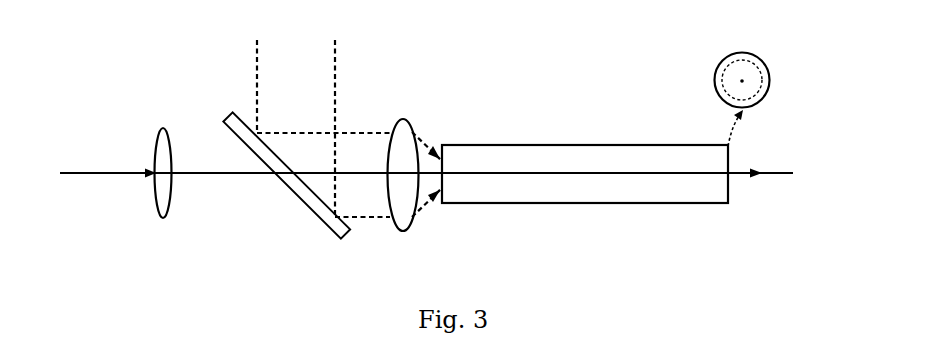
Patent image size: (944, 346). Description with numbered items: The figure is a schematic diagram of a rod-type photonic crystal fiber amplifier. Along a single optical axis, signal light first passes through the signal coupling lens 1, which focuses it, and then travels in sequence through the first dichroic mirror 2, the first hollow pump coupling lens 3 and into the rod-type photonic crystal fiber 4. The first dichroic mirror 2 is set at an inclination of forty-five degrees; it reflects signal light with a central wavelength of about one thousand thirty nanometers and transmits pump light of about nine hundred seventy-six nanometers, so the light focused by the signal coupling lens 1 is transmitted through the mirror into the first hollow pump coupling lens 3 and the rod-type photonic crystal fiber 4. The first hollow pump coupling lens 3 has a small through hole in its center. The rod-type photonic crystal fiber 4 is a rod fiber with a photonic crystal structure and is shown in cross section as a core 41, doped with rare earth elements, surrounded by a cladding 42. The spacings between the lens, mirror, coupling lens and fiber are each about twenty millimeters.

The signal coupling lens 1 is at (158, 212).
The first dichroic mirror 2 is at (306, 208).
The first hollow pump coupling lens 3 is at (392, 210).
The rod-type photonic crystal fiber 4 is at (616, 204).
The core 41 is at (746, 81).
The cladding 42 is at (768, 60).